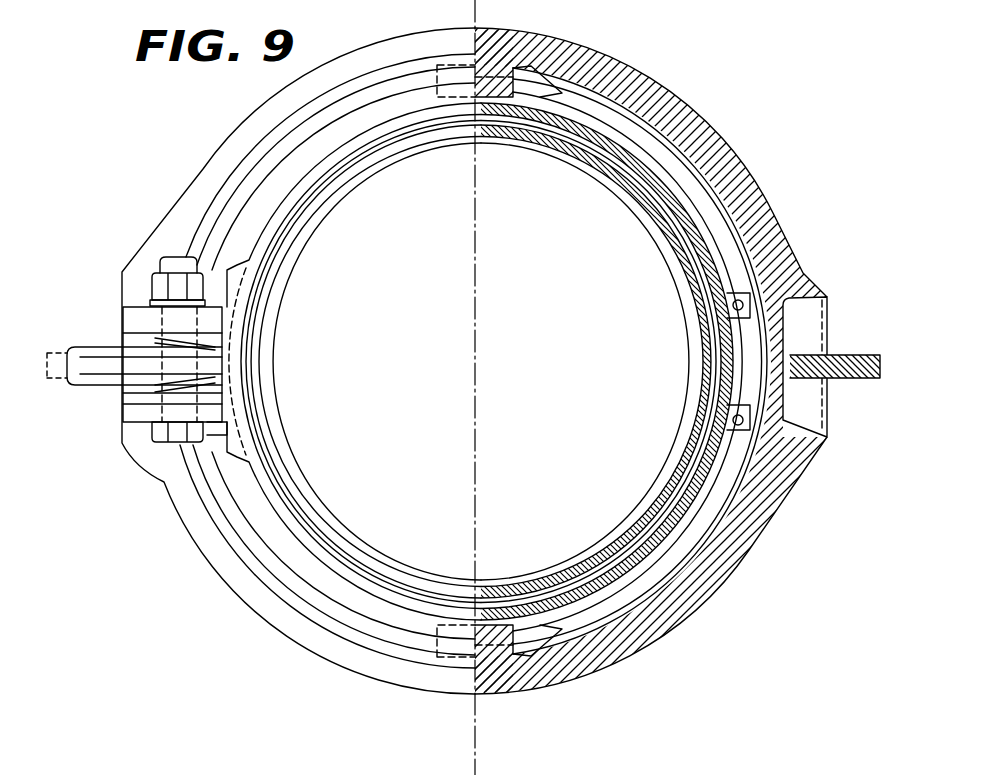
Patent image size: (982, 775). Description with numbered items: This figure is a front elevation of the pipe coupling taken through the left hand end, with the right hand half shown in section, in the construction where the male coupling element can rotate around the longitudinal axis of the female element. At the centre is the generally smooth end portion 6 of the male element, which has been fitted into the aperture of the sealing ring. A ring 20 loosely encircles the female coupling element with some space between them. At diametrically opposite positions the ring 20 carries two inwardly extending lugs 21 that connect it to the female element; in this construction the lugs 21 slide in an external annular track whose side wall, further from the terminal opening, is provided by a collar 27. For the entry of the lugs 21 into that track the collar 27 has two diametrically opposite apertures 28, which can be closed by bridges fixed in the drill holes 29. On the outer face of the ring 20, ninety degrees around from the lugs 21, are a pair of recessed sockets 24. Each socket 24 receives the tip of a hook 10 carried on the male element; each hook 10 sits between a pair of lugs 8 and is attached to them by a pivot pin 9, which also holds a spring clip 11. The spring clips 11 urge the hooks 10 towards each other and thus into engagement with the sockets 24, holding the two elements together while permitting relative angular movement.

The end portion 6 is at (628, 200).
The lugs 8 is at (142, 410).
The pivot pin 9 is at (187, 443).
The hook 10 is at (121, 340).
The spring clip 11 is at (100, 365).
The ring 20 is at (347, 660).
The lugs 21 is at (549, 72).
The recessed sockets 24 is at (787, 338).
The collar 27 is at (722, 257).
The apertures 28 is at (745, 310).
The drill holes 29 is at (738, 408).